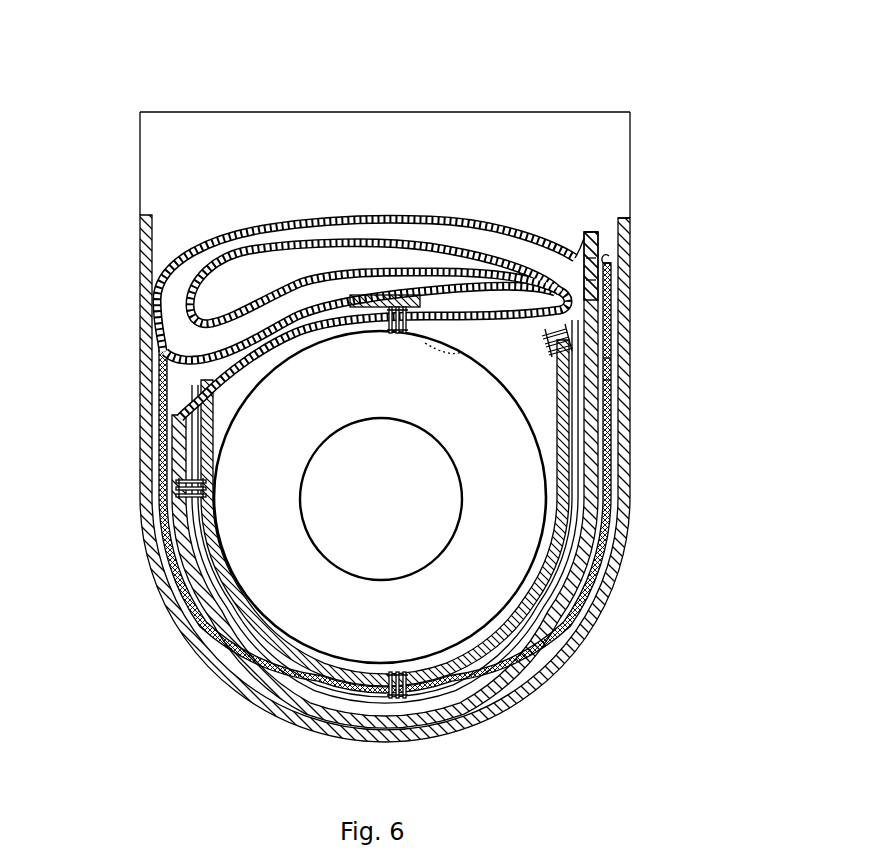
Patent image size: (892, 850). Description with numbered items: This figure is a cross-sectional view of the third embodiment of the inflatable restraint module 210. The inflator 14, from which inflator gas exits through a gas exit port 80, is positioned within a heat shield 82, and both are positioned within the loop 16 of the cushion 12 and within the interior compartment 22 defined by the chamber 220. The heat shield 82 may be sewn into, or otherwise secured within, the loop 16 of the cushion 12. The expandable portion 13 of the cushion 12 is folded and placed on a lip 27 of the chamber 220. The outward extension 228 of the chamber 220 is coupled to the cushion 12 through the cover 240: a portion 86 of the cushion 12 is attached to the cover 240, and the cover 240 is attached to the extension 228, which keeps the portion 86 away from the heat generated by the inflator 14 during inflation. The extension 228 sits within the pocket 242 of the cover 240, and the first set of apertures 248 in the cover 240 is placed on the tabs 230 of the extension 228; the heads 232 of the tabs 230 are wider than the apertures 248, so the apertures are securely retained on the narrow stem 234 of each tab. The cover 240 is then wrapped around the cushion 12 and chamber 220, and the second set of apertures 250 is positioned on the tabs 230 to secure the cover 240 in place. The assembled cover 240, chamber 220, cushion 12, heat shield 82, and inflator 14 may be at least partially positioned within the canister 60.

The inflatable restraint module 210 is at (360, 98).
The cushion 12 is at (580, 480).
The expandable portion 13 is at (422, 214).
The inflator 14 is at (280, 597).
The loop 16 is at (527, 687).
The interior compartment 22 is at (190, 500).
The lip 27 is at (350, 295).
The canister 60 is at (603, 377).
The gas exit port 80 is at (445, 345).
The heat shield 82 is at (467, 727).
The portion of the cushion 86 is at (610, 363).
The chamber 220 is at (580, 613).
The outward extension 228 is at (592, 262).
The tabs 230 is at (590, 231).
The heads 232 is at (603, 212).
The narrow stem 234 is at (618, 248).
The cover 240 is at (195, 248).
The pocket 242 is at (592, 279).
The first set of apertures 248 is at (552, 250).
The second set of apertures 250 is at (605, 242).